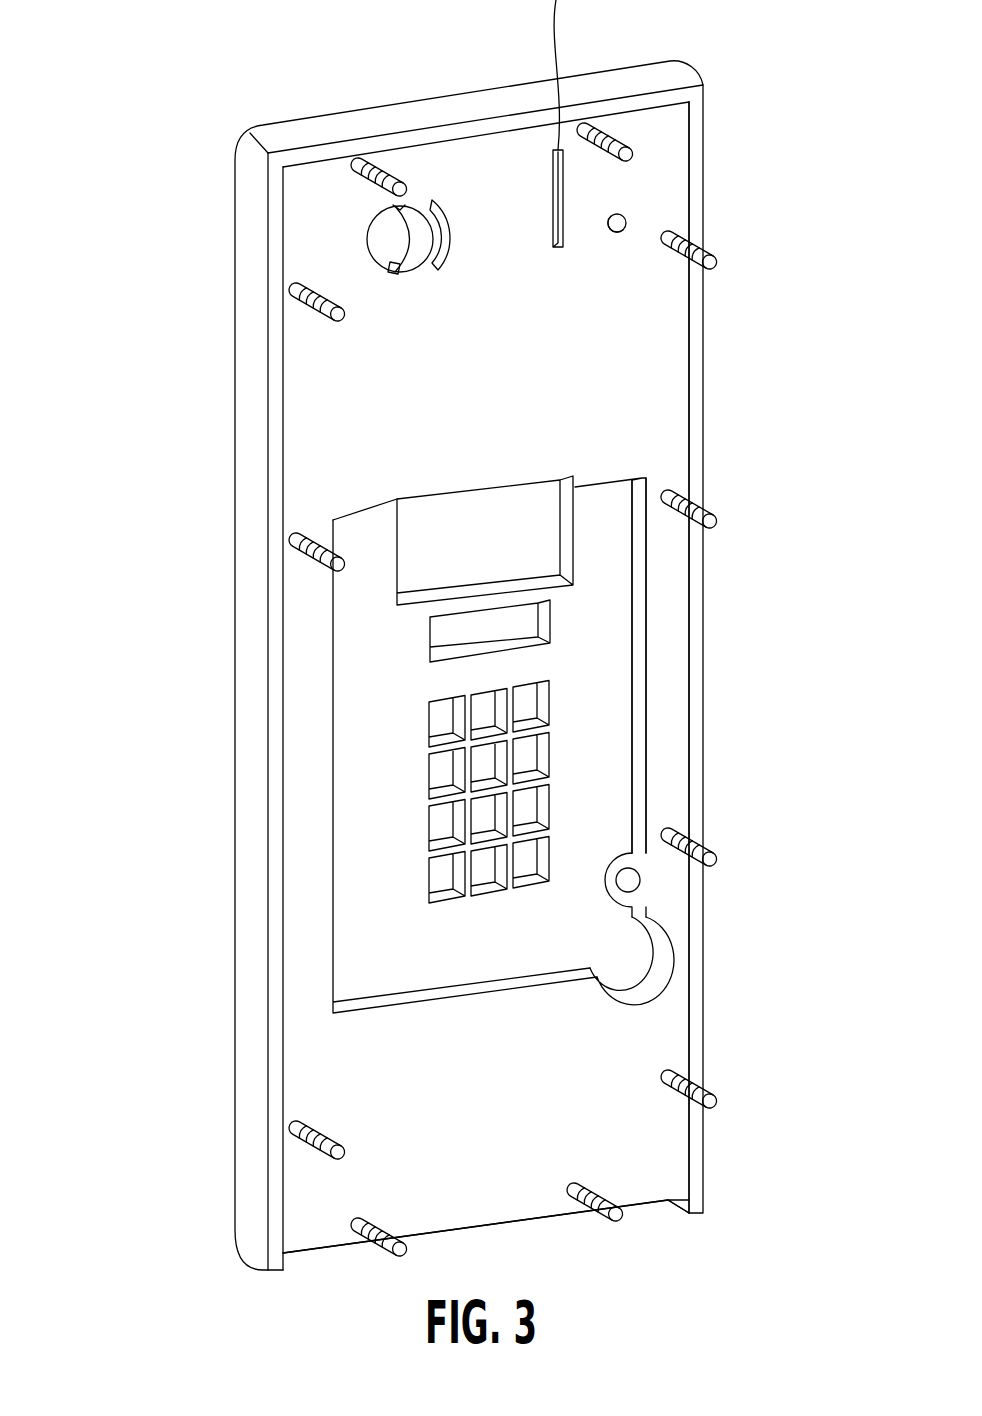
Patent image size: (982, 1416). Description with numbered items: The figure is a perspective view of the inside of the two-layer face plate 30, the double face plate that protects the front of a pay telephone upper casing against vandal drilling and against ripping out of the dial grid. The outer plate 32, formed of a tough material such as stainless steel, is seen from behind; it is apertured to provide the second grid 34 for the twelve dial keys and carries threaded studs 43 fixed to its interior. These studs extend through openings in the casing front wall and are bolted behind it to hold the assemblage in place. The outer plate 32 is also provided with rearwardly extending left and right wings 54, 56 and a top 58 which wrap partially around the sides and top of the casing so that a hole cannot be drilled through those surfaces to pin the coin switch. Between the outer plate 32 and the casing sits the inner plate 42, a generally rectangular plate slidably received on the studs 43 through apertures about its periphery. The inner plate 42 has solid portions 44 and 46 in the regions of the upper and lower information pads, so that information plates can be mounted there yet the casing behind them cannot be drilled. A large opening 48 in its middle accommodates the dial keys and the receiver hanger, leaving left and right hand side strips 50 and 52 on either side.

The two-layer face plate 30 is at (151, 232).
The outer plate 32 is at (466, 744).
The second grid 34 is at (550, 735).
The inner plate 42 is at (298, 578).
The threaded studs 43 is at (712, 520).
The solid portion 44 is at (506, 389).
The solid portion 46 is at (506, 1127).
The large opening 48 is at (620, 770).
The left hand side strip 50 is at (683, 618).
The right hand side strip 52 is at (300, 800).
The left side wing 54 is at (700, 200).
The right side wing 56 is at (244, 468).
The top 58 is at (368, 108).